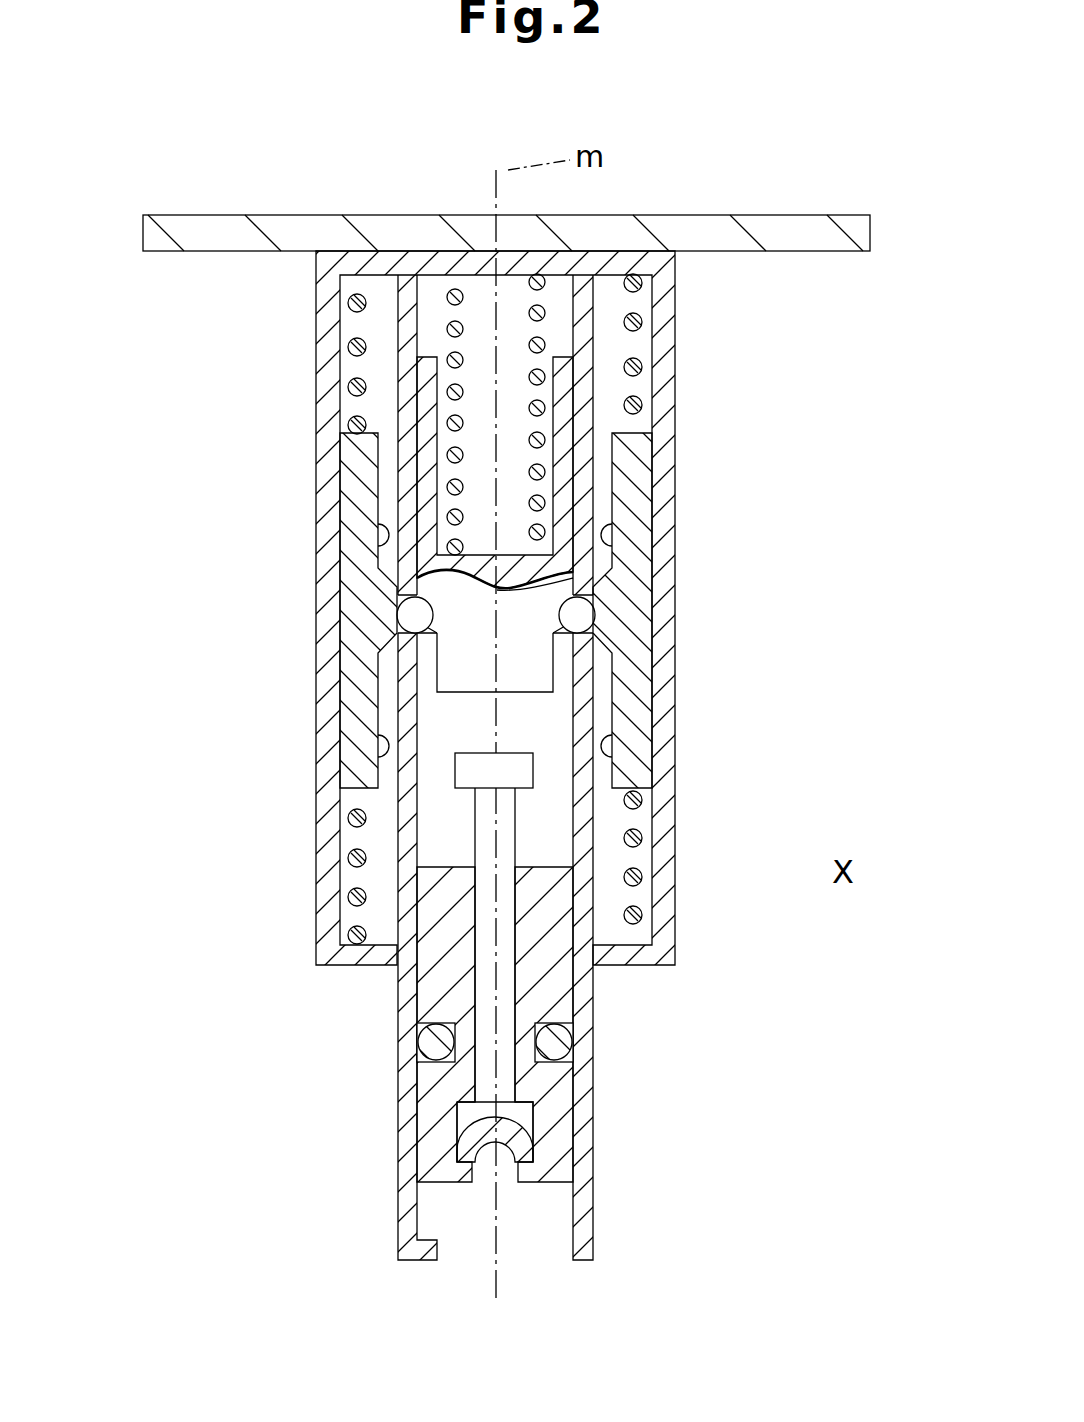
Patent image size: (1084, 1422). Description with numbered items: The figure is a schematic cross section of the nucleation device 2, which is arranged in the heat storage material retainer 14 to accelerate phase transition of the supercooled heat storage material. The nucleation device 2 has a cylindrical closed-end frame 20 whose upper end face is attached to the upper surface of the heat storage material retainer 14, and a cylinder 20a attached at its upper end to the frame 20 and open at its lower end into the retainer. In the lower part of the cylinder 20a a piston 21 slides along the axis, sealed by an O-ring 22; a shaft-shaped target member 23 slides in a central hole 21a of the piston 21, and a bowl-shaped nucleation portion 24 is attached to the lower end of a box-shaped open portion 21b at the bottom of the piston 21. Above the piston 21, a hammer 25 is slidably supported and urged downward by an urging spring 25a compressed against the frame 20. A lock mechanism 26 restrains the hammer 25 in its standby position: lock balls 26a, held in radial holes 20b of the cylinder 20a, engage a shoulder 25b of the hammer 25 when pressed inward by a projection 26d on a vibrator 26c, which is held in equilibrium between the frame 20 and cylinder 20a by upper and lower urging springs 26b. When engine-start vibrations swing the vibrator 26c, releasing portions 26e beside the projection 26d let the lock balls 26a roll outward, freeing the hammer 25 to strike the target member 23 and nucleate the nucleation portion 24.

The nucleation device 2 is at (808, 473).
The heat storage material retainer 14 is at (813, 217).
The frame 20 is at (675, 438).
The cylinder 20a is at (593, 397).
The holes 20b is at (595, 627).
The piston 21 is at (558, 1092).
The hole 21a is at (510, 965).
The open portion 21b is at (470, 1122).
The O-ring 22 is at (418, 1042).
The target member 23 is at (463, 970).
The nucleation portion 24 is at (500, 1118).
The hammer 25 is at (540, 665).
The urging spring 25a is at (450, 330).
The shoulder 25b is at (595, 610).
The lock mechanism 26 is at (427, 686).
The lock balls 26a is at (560, 623).
The urging springs 26b is at (638, 315).
The vibrator 26c is at (642, 495).
The projection 26d is at (417, 582).
The releasing portions 26e is at (610, 530).